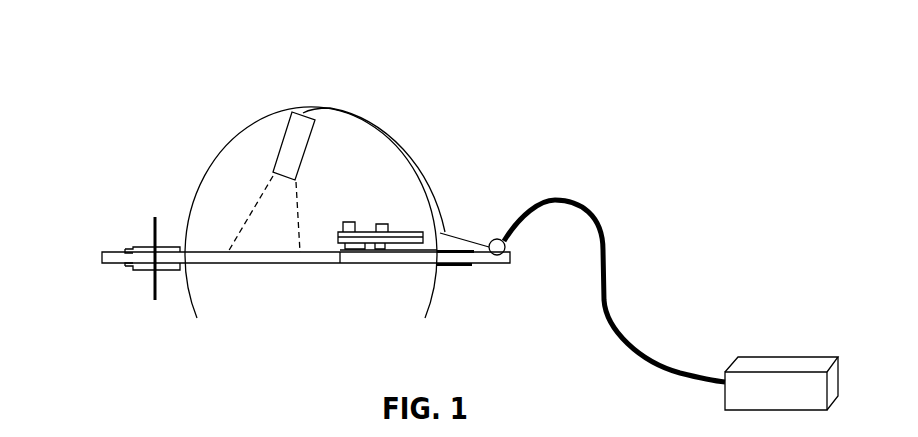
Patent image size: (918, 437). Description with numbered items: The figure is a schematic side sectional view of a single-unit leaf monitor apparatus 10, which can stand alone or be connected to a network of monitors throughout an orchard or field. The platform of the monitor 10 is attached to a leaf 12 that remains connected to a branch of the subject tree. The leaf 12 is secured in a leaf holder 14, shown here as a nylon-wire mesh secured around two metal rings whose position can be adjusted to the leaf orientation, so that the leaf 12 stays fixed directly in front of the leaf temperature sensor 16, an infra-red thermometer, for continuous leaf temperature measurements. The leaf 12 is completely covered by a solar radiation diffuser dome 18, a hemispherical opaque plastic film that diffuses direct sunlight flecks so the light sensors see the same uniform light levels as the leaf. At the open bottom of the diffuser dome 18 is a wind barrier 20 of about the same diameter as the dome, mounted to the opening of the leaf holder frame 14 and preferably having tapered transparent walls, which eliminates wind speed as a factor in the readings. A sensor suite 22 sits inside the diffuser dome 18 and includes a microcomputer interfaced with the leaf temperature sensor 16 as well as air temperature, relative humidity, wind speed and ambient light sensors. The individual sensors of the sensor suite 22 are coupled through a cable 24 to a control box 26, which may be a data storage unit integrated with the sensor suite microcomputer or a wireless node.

The leaf monitor apparatus 10 is at (131, 63).
The leaf 12 is at (258, 265).
The leaf holder 14 is at (490, 262).
The leaf temperature sensor 16 is at (303, 113).
The solar radiation diffuser dome 18 is at (208, 182).
The wind barrier 20 is at (192, 305).
The sensor suite 22 is at (360, 232).
The cable 24 is at (604, 242).
The control box 26 is at (760, 357).